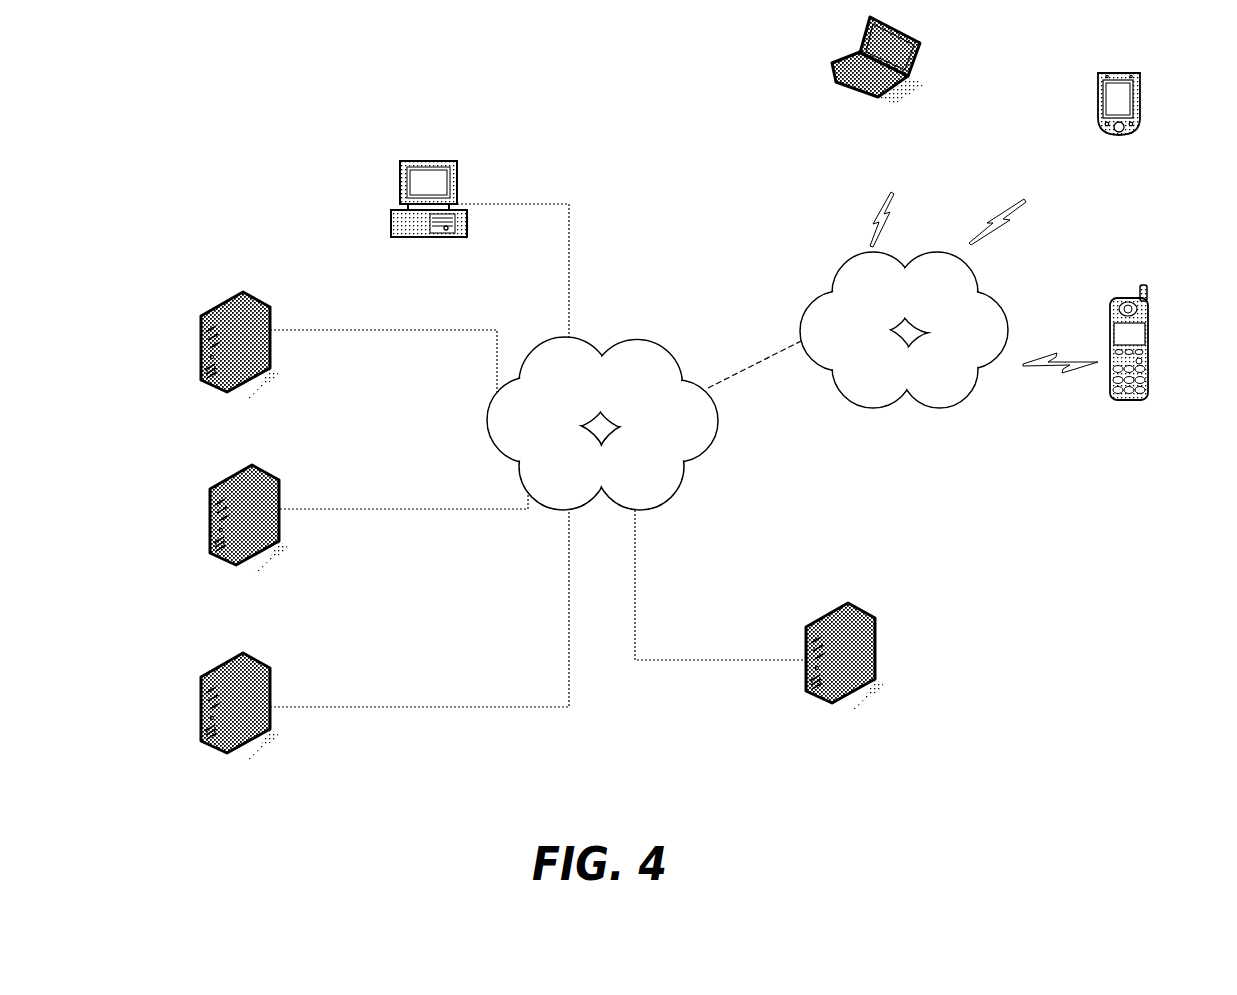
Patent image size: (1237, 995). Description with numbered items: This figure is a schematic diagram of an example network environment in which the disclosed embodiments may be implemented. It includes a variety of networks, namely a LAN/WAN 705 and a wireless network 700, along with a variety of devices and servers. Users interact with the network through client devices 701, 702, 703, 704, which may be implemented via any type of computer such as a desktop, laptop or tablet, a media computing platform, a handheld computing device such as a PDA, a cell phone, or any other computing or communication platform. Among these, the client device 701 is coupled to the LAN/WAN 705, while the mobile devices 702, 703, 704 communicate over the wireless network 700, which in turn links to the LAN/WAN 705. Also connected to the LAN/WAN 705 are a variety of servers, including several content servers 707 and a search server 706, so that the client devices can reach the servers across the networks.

The wireless network 700 is at (850, 265).
The client device 701 is at (407, 160).
The mobile device 702 is at (847, 60).
The mobile device 703 is at (1100, 74).
The mobile device 704 is at (1125, 298).
The LAN/WAN 705 is at (627, 335).
The search server 706 is at (848, 603).
The content server 707 is at (205, 312).